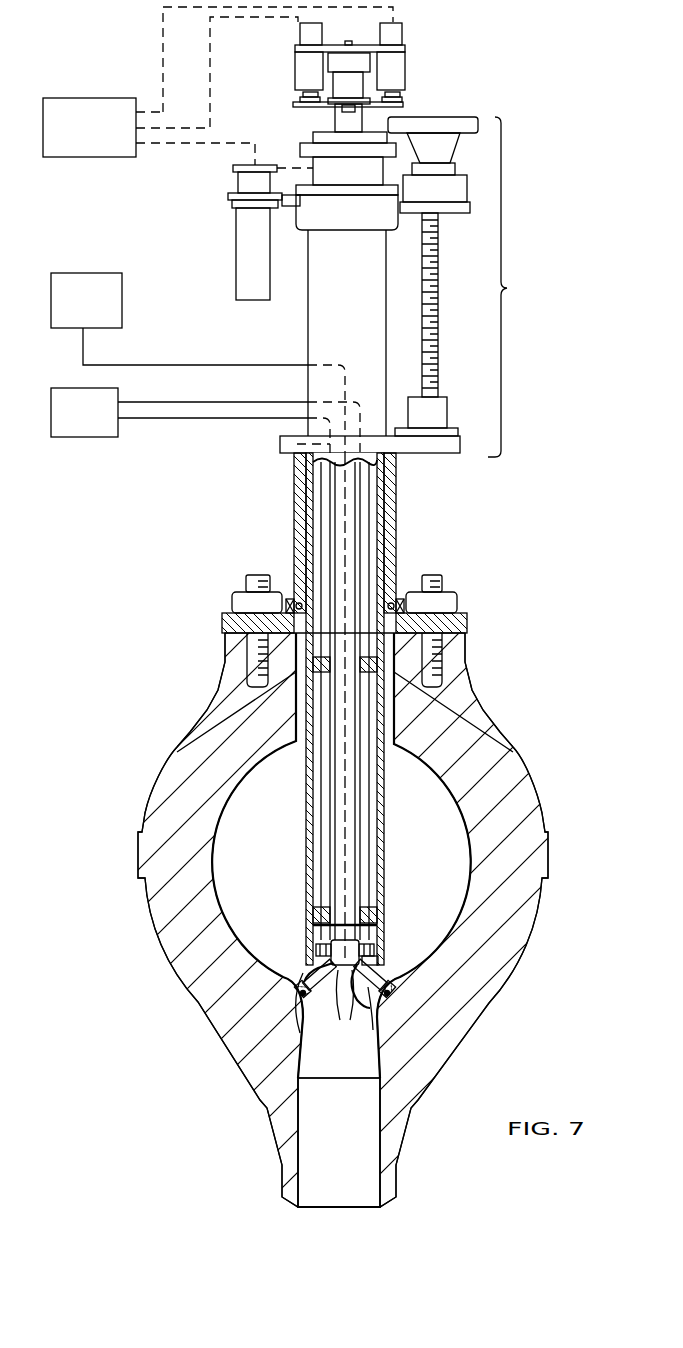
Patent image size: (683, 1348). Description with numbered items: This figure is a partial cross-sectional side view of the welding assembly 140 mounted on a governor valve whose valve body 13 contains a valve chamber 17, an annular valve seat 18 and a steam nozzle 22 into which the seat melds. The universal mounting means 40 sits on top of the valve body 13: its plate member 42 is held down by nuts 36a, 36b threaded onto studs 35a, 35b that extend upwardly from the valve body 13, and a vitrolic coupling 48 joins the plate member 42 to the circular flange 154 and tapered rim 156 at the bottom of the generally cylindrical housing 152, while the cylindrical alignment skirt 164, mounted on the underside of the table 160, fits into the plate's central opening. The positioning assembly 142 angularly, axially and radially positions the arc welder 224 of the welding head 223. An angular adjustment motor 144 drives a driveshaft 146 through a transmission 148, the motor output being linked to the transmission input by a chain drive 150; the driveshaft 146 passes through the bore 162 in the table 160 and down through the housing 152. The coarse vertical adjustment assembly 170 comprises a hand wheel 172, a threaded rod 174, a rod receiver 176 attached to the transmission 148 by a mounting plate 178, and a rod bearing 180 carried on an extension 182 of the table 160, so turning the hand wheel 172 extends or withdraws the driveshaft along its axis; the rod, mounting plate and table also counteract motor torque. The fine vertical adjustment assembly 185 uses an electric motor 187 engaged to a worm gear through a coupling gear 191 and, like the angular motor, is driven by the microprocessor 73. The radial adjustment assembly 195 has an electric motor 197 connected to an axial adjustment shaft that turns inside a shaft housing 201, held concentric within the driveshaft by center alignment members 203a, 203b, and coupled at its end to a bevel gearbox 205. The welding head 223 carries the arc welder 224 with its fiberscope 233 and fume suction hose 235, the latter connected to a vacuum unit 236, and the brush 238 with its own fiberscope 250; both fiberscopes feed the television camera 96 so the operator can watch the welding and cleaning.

The valve body 13 is at (167, 768).
The valve chamber 17 is at (265, 850).
The annular valve seat 18 is at (308, 956).
The steam nozzle 22 is at (363, 1139).
The stud 35a is at (253, 662).
The stud 35b is at (442, 660).
The nut 36a is at (233, 600).
The nut 36b is at (454, 603).
The universal mounting means 40 is at (206, 622).
The plate member 42 is at (470, 625).
The vitrolic coupling 48 is at (403, 586).
The microprocessor 73 is at (60, 158).
The television camera 96 is at (85, 437).
The welding assembly 140 is at (116, 58).
The positioning assembly 142 is at (272, 352).
The angular adjustment motor 144 is at (238, 282).
The driveshaft 146 is at (386, 498).
The transmission 148 is at (343, 175).
The chain drive 150 is at (288, 166).
The housing 152 is at (296, 480).
The circular flange 154 is at (292, 600).
The tapered rim 156 is at (399, 634).
The table 160 is at (370, 434).
The bore 162 is at (297, 444).
The cylindrical alignment skirt 164 is at (386, 530).
The coarse vertical adjustment assembly 170 is at (509, 288).
The hand wheel 172 is at (443, 145).
The threaded rod 174 is at (439, 293).
The rod receiver 176 is at (477, 252).
The mounting plate 178 is at (417, 212).
The rod bearing 180 is at (445, 409).
The extension 182 is at (438, 446).
The fine vertical adjustment assembly 185 is at (292, 20).
The electric motor 187 is at (313, 62).
The coupling gear 191 is at (310, 106).
The radial adjustment assembly 195 is at (368, 932).
The electric motor 197 is at (400, 70).
The shaft housing 201 is at (355, 839).
The center alignment member 203a is at (313, 665).
The center alignment member 203b is at (365, 907).
The bevel gearbox 205 is at (341, 992).
The welding head 223 is at (315, 930).
The arc welder 224 is at (382, 990).
The fiberscope 233 is at (378, 966).
The fume suction hose 235 is at (370, 1020).
The vacuum unit 236 is at (122, 318).
The brush 238 is at (303, 1025).
The fiberscope 250 is at (310, 993).